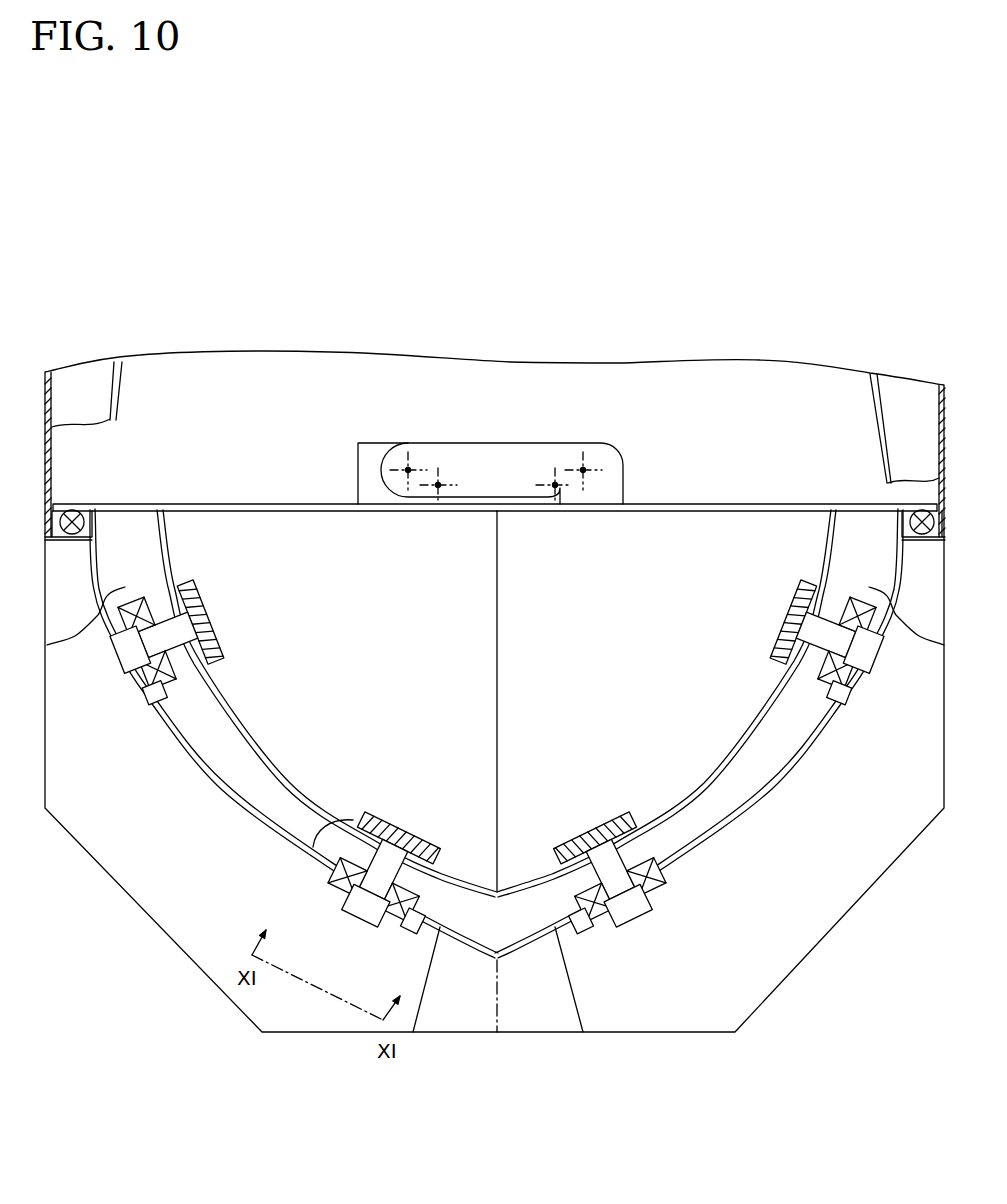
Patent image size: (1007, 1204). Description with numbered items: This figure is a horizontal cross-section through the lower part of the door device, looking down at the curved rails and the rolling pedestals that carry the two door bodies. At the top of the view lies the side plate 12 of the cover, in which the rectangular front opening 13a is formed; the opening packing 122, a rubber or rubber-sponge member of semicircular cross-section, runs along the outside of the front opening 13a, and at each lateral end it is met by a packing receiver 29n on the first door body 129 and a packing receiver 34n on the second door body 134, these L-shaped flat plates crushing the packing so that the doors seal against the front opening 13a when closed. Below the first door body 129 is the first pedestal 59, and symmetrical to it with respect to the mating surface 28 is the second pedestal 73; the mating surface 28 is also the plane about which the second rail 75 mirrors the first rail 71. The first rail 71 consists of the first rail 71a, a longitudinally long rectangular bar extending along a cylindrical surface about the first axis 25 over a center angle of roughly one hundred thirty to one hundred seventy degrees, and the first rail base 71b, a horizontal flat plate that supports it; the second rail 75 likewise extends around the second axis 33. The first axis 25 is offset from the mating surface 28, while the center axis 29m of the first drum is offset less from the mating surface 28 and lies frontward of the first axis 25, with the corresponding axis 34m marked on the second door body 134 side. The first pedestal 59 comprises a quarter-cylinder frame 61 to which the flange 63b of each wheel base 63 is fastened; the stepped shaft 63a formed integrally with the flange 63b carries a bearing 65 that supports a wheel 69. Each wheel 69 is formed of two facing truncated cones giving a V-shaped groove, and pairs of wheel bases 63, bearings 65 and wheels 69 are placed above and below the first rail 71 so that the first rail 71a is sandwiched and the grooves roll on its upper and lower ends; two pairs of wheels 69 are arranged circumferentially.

The side plate 12 is at (920, 538).
The front opening 13a is at (100, 548).
The first axis 25 is at (583, 470).
The mating surface 28 is at (497, 1018).
The center axis of the first drum 29m is at (555, 486).
The packing receiver 29n is at (82, 504).
The second axis 33 is at (408, 470).
The bolt hole 34m is at (438, 486).
The packing receiver 34n is at (905, 508).
The first pedestal 59 is at (294, 741).
The frame 61 is at (288, 776).
The wheel base 63 is at (312, 892).
The shaft 63a is at (345, 908).
The flange 63b is at (345, 830).
The bearing 65 is at (370, 925).
The wheel 69 is at (412, 922).
The first rail 71 is at (294, 733).
The first rail 71a is at (188, 726).
The first rail base 71b is at (200, 765).
The second pedestal 73 is at (699, 733).
The second rail 75 is at (697, 842).
The opening packing 122 is at (76, 505).
The first door body 129 is at (240, 503).
The second door body 134 is at (725, 501).